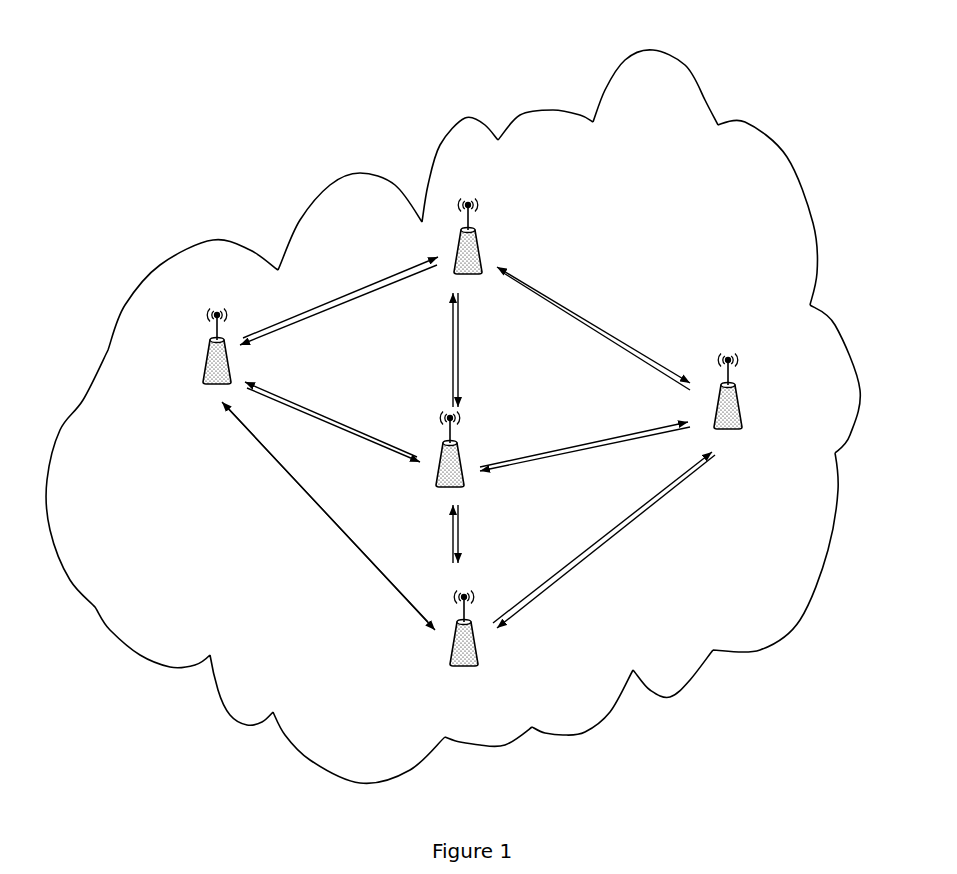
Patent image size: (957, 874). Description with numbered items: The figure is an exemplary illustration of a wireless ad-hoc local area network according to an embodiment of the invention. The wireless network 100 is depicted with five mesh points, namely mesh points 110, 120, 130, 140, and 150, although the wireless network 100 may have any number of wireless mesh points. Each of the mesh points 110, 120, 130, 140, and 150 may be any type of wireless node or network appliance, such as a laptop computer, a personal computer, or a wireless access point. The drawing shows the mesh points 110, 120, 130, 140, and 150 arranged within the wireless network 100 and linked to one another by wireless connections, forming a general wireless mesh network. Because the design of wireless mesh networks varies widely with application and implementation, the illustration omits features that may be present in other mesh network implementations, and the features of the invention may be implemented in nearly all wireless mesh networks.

The wireless network 100 is at (453, 403).
The mesh point 110 is at (489, 237).
The mesh point 120 is at (193, 367).
The mesh point 130 is at (433, 455).
The mesh point 140 is at (742, 408).
The mesh point 150 is at (440, 665).